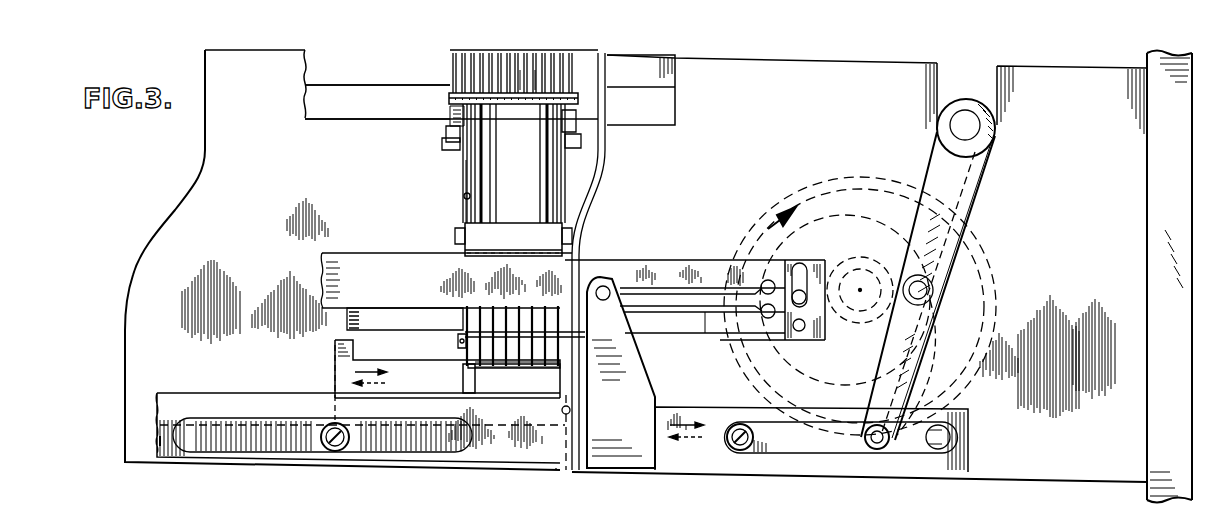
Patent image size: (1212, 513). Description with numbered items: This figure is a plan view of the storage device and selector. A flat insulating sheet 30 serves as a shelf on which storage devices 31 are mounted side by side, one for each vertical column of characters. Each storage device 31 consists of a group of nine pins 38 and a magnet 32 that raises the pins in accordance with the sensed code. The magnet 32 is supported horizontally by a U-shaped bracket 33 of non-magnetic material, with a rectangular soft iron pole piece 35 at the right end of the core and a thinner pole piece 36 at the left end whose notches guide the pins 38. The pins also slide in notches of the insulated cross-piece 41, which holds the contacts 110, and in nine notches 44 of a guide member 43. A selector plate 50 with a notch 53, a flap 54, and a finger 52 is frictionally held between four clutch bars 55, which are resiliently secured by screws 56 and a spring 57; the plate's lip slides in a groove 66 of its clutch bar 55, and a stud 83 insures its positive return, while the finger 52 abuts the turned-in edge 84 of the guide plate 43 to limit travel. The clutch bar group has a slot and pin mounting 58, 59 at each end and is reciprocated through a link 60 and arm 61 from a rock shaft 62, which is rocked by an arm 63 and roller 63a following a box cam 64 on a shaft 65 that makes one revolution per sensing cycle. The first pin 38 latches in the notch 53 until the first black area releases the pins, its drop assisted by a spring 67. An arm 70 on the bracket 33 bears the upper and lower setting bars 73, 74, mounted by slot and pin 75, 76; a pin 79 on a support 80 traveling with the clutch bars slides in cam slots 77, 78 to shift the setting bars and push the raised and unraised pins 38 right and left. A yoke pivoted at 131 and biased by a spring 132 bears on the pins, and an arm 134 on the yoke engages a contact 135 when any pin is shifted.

The base sheet 30 is at (658, 276).
The storage device 31 is at (578, 56).
The magnet 32 is at (514, 163).
The U-shaped bracket 33 is at (574, 238).
The pole piece 35 is at (513, 239).
The pole piece 36 is at (452, 110).
The pins 38 is at (560, 356).
The insulated cross-piece 41 is at (641, 90).
The guide member 43 is at (462, 334).
The notches 44 is at (500, 338).
The selector plate 50 is at (447, 380).
The finger 52 is at (337, 345).
The notch 53 is at (497, 372).
The flap 54 is at (477, 382).
The clutch bars 55 is at (684, 415).
The screws 56 is at (322, 450).
The spring 57 is at (405, 455).
The slot 58 is at (918, 450).
The pin 59 is at (950, 440).
The link 60 is at (730, 446).
The arm 61 is at (970, 195).
The rock shaft 62 is at (980, 125).
The arm 63 is at (956, 238).
The roller 63a is at (926, 299).
The box cam 64 is at (838, 170).
The shaft 65 is at (896, 198).
The groove 66 is at (175, 457).
The spring 67 is at (463, 198).
The projecting arm 70 is at (570, 282).
The upper setting bar 73 is at (661, 260).
The lower setting bar 74 is at (660, 325).
The slot 75 is at (799, 280).
The pin 76 is at (806, 280).
The longitudinal slot 77 is at (760, 282).
The longitudinal slot 78 is at (722, 320).
The pin 79 is at (608, 283).
The support 80 is at (621, 372).
The stud 83 is at (556, 468).
The turned-in edge 84 is at (458, 342).
The contacts 110 is at (536, 90).
The pivot 131 is at (582, 148).
The spring 132 is at (578, 120).
The arm 134 is at (450, 95).
The contact 135 is at (453, 90).